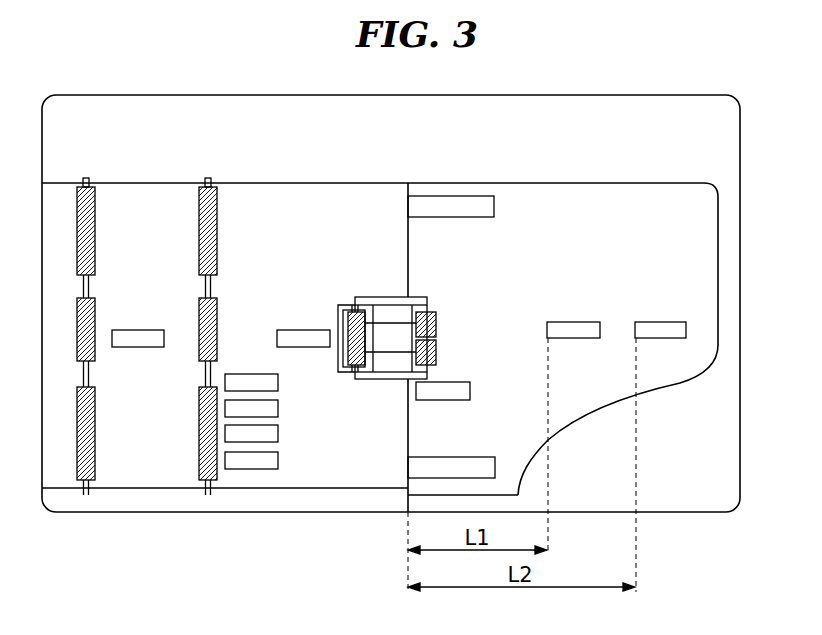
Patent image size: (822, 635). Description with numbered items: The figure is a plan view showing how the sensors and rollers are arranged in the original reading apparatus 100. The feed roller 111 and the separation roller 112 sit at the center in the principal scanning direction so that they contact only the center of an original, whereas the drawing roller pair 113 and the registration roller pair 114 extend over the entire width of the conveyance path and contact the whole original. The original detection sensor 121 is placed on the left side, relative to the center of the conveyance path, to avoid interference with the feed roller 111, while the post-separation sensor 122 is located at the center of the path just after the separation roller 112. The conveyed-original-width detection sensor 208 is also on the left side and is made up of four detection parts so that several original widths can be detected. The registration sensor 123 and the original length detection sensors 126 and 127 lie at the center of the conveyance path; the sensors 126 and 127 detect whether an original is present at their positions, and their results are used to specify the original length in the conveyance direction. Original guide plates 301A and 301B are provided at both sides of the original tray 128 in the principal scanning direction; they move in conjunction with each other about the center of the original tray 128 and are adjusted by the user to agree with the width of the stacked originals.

The original reading apparatus 100 is at (734, 612).
The feed roller 111 is at (436, 322).
The separation roller 112 is at (347, 312).
The drawing roller pair 113 is at (211, 182).
The registration roller pair 114 is at (90, 182).
The original detection sensor 121 is at (470, 391).
The post-separation sensor 122 is at (297, 330).
The registration sensor 123 is at (139, 330).
The original length detection sensor 126 is at (574, 322).
The original length detection sensor 127 is at (664, 322).
The original tray 128 is at (700, 361).
The conveyed-original-width detection sensor 208 is at (278, 383).
The original guide plate 301A is at (494, 210).
The original guide plate 301B is at (473, 457).